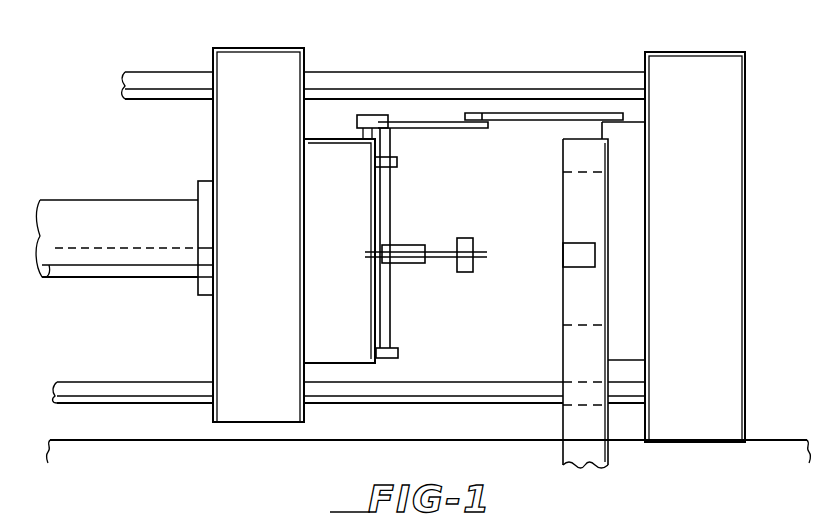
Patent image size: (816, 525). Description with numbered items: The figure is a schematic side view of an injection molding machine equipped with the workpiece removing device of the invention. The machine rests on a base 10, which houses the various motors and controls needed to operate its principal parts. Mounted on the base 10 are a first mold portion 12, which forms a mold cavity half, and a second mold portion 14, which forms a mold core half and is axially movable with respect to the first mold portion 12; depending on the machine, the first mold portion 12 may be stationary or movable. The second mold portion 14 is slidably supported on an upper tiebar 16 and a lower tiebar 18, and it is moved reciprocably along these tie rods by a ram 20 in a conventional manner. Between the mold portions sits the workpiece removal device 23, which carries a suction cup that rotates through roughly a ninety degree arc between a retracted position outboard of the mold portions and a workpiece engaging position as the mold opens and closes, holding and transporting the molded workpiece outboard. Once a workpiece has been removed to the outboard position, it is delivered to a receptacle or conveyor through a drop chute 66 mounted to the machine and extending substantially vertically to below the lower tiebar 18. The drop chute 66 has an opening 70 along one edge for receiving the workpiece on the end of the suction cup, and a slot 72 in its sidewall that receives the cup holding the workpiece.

The base 10 is at (708, 481).
The first mold portion 12 is at (708, 305).
The second mold portion 14 is at (266, 243).
The upper tiebar 16 is at (511, 81).
The lower tiebar 18 is at (139, 389).
The ram 20 is at (146, 175).
The workpiece removal device 23 is at (412, 215).
The drop chute 66 is at (568, 357).
The opening 70 is at (562, 204).
The slot 72 is at (572, 257).